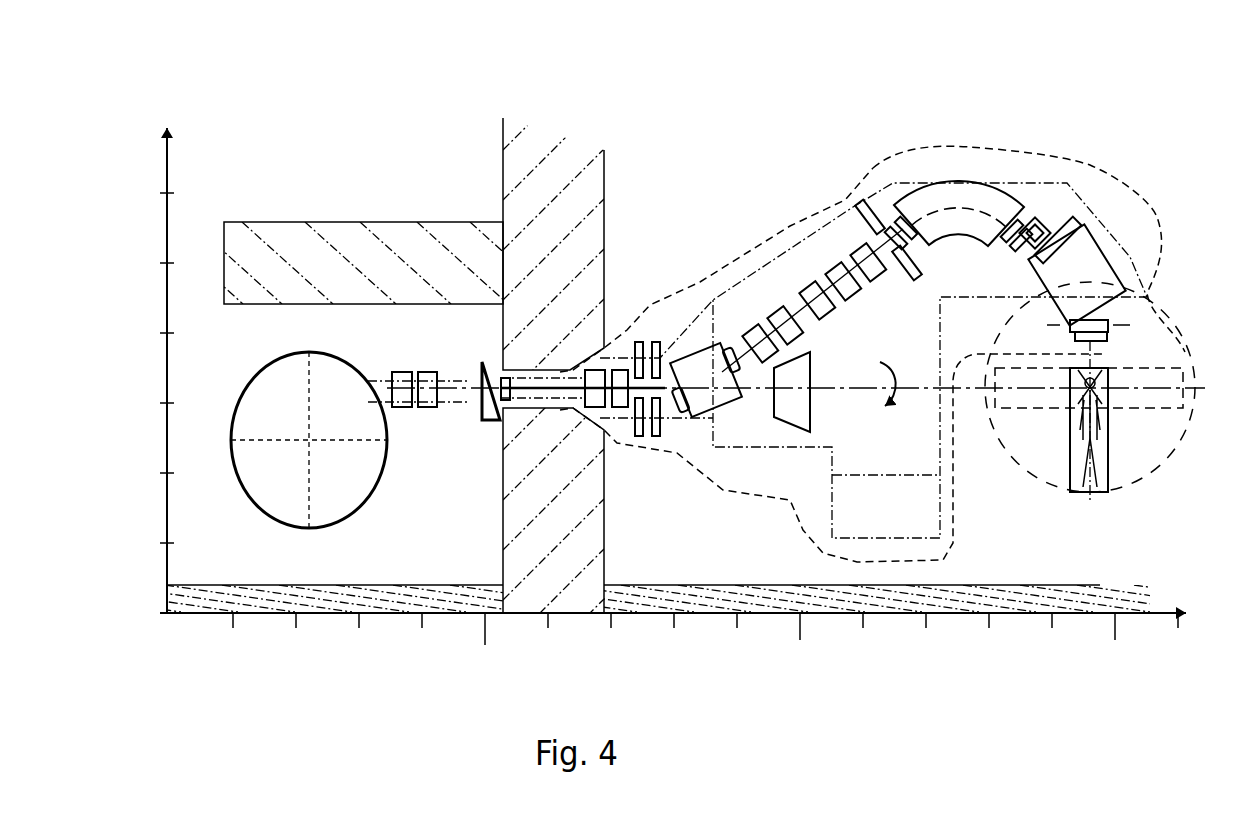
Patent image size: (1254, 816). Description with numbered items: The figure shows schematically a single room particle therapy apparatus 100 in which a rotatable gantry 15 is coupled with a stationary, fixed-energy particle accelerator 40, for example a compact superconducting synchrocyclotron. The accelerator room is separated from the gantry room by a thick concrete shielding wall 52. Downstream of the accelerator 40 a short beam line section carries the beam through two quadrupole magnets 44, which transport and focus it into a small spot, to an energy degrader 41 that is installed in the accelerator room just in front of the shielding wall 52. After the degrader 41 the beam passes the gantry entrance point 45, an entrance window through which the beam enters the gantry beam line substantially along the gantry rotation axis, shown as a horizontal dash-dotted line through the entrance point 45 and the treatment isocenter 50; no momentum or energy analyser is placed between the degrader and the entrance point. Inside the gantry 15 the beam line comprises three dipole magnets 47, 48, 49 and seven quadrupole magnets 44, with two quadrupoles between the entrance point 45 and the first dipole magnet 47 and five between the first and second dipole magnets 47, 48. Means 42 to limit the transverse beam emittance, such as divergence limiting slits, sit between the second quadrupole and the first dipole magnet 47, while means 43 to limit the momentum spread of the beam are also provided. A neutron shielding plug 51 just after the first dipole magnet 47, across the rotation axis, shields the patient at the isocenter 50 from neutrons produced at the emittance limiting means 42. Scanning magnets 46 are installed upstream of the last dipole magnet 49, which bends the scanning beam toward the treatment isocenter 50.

The single room particle therapy apparatus 100 is at (388, 92).
The gantry 15 is at (937, 143).
The particle accelerator 40 is at (250, 375).
The energy degrader 41 is at (488, 430).
The means to limit the transverse beam emittance 42 is at (648, 452).
The means to limit the momentum spread of the beam 43 is at (853, 198).
The quadrupole magnets 44 is at (428, 418).
The gantry entrance point 45 is at (497, 374).
The scanning magnets 46 is at (1055, 224).
The first dipole magnet 47 is at (733, 422).
The second dipole magnet 48 is at (985, 173).
The last dipole magnet 49 is at (1122, 261).
The treatment isocenter 50 is at (1107, 376).
The neutron shielding plug 51 is at (817, 391).
The shielding wall 52 is at (575, 228).